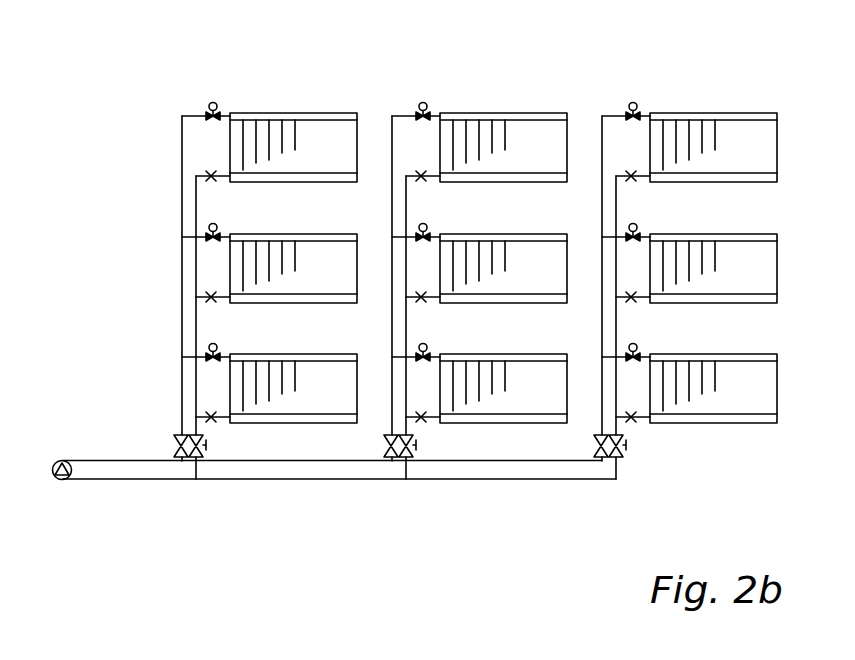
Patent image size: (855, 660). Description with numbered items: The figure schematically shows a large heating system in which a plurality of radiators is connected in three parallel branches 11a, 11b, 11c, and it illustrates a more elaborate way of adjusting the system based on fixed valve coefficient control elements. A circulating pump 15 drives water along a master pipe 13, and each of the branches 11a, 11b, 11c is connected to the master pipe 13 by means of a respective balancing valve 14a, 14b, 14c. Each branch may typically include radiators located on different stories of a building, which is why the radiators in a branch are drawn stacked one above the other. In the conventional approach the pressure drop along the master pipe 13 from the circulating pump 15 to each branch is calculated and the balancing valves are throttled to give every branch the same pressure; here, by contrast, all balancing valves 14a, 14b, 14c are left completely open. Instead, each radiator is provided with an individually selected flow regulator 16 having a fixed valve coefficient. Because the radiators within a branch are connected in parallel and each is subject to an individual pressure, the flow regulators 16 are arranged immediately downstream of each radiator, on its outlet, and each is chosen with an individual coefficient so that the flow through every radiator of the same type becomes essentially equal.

The first branch of radiators 11a is at (268, 106).
The second branch of radiators 11b is at (490, 106).
The third branch of radiators 11c is at (707, 100).
The master pipe 13 is at (100, 460).
The first balancing valve 14a is at (201, 450).
The second balancing valve 14b is at (411, 450).
The third balancing valve 14c is at (621, 452).
The circulating pump 15 is at (58, 480).
The flow regulator 16 is at (211, 176).